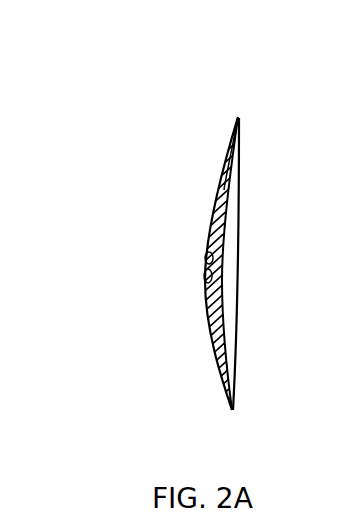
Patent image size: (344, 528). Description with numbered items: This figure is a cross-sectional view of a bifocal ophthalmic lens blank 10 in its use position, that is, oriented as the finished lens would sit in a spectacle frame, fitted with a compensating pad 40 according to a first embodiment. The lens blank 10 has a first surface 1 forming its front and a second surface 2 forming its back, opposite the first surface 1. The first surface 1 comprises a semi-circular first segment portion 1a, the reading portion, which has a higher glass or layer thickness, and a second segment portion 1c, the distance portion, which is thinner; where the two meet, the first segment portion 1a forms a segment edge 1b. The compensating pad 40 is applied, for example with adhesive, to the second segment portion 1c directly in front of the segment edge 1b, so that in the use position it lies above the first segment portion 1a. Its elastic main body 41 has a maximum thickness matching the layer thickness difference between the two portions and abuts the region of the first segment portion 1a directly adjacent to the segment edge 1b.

The bifocal ophthalmic lens blank 10 is at (175, 234).
The first surface 1 is at (192, 267).
The first semi-circular segment portion 1a is at (207, 333).
The segment edge 1b is at (205, 287).
The second segment portion 1c is at (227, 157).
The second surface 2 is at (222, 192).
The compensating pad 40 is at (210, 260).
The main body 41 is at (207, 271).